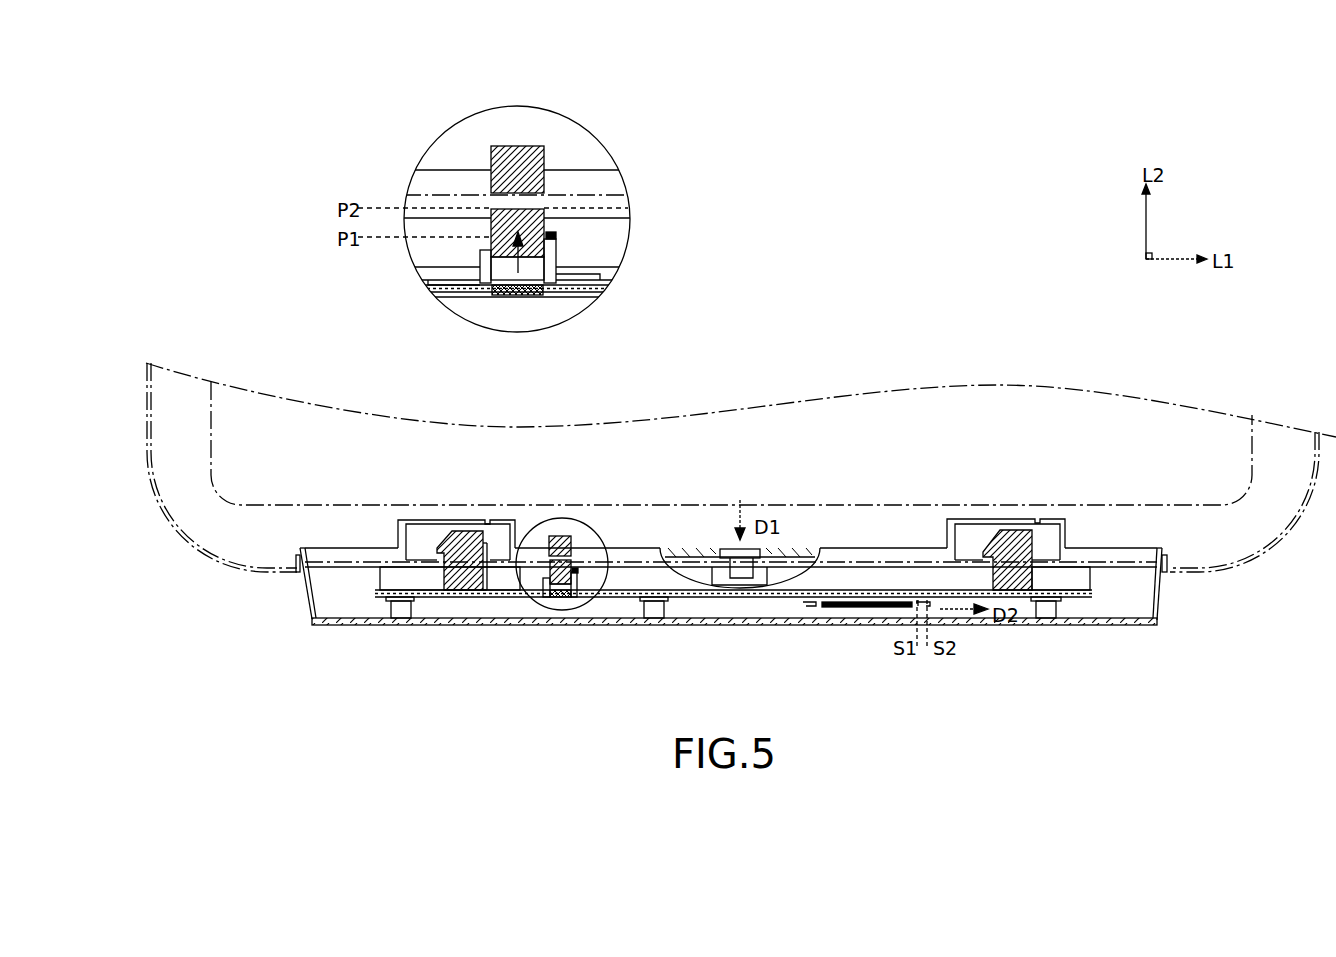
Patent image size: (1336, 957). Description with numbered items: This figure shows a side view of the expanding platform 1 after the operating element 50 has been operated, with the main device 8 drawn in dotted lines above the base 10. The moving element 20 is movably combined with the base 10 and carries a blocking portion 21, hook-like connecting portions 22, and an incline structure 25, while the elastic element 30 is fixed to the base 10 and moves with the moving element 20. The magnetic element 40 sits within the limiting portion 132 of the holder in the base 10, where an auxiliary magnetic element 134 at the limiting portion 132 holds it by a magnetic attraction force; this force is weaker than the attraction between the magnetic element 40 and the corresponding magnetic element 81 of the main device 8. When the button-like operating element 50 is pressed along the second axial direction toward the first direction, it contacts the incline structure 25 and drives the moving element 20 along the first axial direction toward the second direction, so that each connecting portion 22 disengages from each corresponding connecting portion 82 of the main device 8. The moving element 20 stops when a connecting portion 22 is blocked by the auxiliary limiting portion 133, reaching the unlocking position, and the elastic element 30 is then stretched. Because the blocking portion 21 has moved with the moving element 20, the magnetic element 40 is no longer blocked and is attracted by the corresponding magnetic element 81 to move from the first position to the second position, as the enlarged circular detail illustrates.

The expanding platform 1 is at (1191, 697).
The main device 8 is at (1228, 406).
The base 10 is at (306, 632).
The moving element 20 is at (434, 612).
The blocking portion 21 is at (576, 570).
The connecting portion 22 is at (464, 531).
The incline structure 25 is at (747, 580).
The elastic element 30 is at (878, 618).
The magnetic element 40 is at (546, 600).
The operating element 50 is at (733, 548).
The corresponding magnetic element 81 is at (562, 536).
The corresponding connecting portion 82 is at (433, 560).
The limiting portion 132 is at (549, 282).
The auxiliary limiting portion 133 is at (485, 592).
The auxiliary magnetic element 134 is at (560, 598).